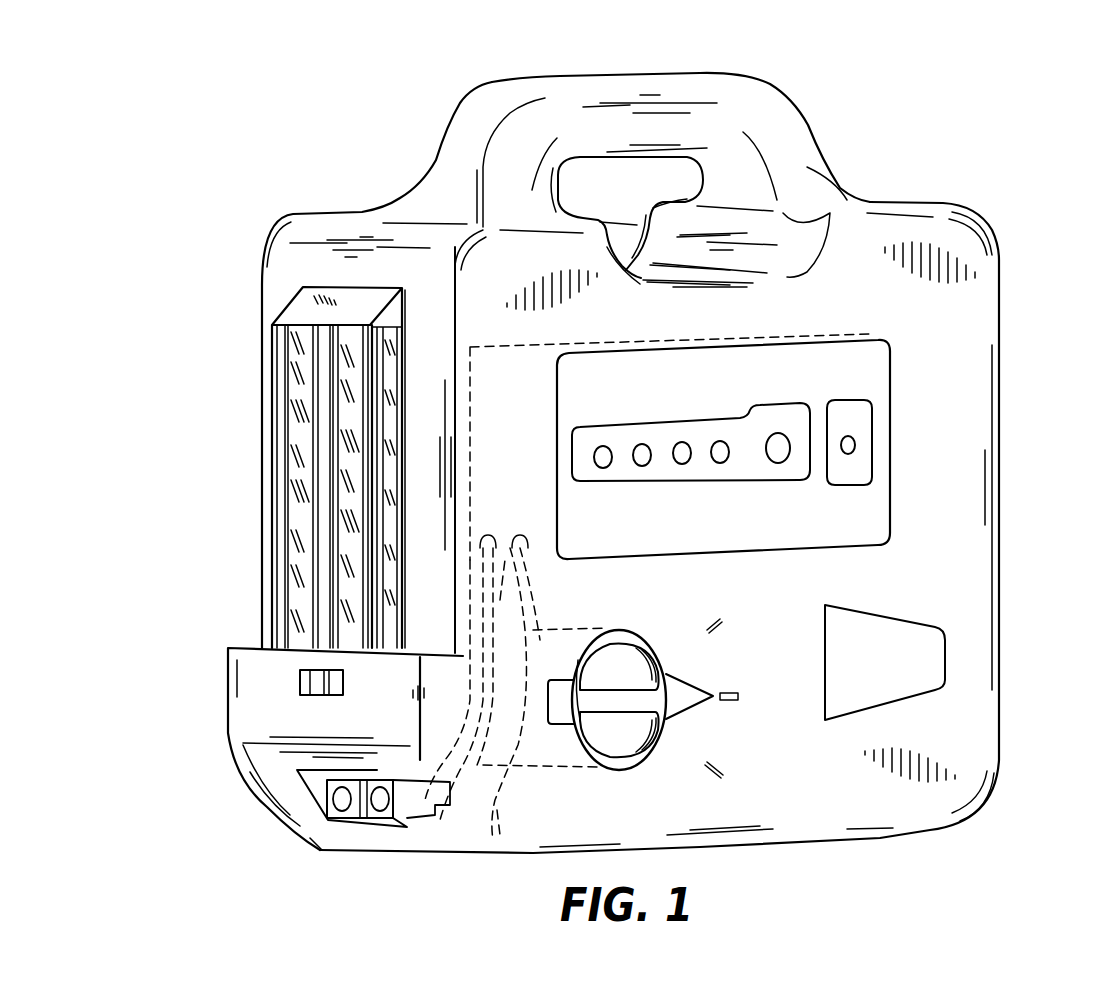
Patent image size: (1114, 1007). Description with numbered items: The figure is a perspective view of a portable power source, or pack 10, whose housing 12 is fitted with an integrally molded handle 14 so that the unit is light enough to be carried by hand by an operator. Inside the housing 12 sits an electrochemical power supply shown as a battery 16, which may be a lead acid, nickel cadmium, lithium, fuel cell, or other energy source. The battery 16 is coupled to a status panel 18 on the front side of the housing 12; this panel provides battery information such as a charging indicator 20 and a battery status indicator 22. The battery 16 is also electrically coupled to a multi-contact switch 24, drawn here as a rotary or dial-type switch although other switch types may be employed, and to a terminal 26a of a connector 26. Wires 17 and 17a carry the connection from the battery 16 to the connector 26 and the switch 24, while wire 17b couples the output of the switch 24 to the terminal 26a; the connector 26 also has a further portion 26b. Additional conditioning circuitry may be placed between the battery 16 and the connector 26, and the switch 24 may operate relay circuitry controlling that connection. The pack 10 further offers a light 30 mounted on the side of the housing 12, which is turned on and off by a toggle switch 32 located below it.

The pack 10 is at (972, 54).
The housing 12 is at (985, 304).
The handle 14 is at (486, 102).
The battery 16 is at (503, 380).
The wire 17 is at (465, 612).
The wire 17a is at (507, 600).
The wire 17b is at (521, 827).
The status panel 18 is at (877, 372).
The charging indicator 20 is at (853, 473).
The battery status indicator 22 is at (770, 472).
The multi-contact switch 24 is at (577, 715).
The connector 26 is at (365, 845).
The terminal 26a is at (393, 818).
The connector base 26b is at (322, 850).
The light 30 is at (292, 428).
The toggle switch 32 is at (307, 692).